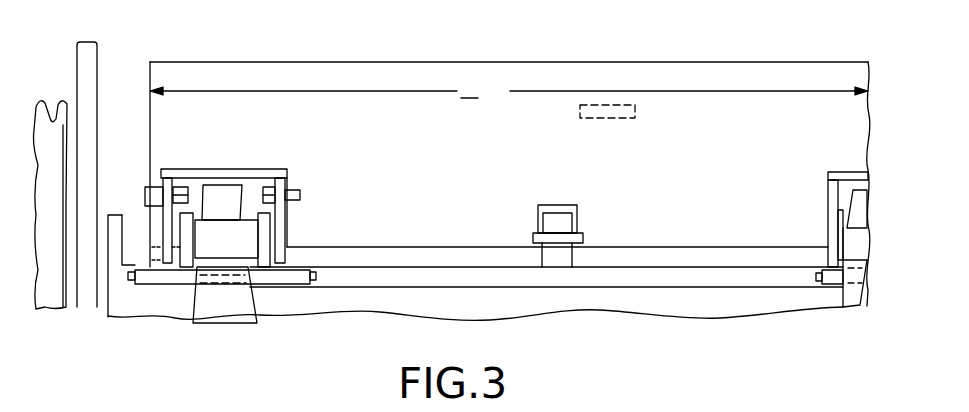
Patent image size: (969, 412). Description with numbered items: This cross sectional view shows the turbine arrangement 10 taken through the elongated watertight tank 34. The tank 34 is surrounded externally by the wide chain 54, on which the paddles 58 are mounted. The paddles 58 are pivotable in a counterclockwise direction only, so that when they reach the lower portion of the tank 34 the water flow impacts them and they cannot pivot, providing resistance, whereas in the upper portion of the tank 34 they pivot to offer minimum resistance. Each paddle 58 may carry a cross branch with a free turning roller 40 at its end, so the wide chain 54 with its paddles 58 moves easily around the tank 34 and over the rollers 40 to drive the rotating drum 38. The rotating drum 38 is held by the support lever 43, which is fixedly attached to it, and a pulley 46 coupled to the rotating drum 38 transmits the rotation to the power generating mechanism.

The apparatus 10 is at (230, 48).
The elongated watertight tank 34 is at (147, 295).
The rotating drum 38 is at (292, 292).
The roller 40 is at (246, 226).
The support lever 43 is at (96, 90).
The pulley 46 is at (57, 143).
The wide chain 54 is at (289, 165).
The paddles 58 is at (588, 64).